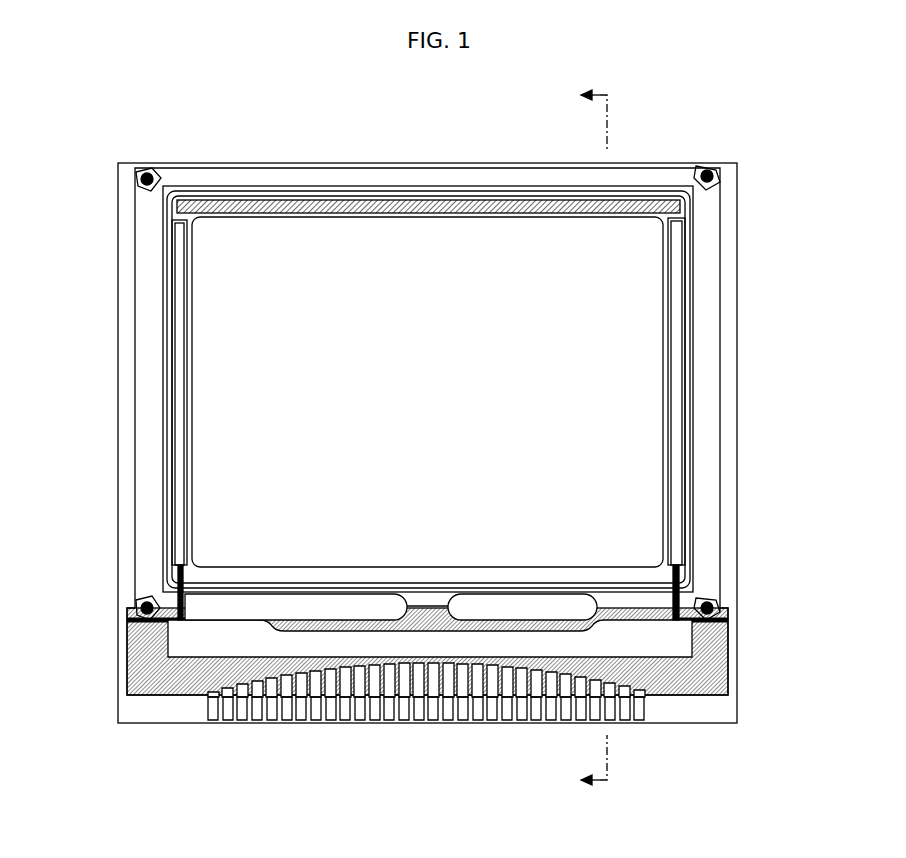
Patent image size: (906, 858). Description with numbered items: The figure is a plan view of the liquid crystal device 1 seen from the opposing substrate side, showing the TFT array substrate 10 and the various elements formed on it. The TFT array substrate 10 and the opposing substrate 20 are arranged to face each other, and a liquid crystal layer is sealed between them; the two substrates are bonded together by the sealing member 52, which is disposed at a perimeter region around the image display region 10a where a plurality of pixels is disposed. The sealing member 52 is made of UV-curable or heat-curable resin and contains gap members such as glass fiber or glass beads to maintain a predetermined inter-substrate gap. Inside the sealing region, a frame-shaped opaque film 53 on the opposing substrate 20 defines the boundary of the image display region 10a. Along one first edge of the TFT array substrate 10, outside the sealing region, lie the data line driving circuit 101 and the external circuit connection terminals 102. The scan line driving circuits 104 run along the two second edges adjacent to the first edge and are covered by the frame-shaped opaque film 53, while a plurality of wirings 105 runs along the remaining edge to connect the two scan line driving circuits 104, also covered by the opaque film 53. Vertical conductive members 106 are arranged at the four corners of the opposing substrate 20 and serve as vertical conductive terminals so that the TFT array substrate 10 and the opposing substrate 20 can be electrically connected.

The liquid crystal device 1 is at (664, 118).
The TFT array substrate 10 is at (247, 162).
The image display region 10a is at (235, 345).
The opposing substrate 20 is at (450, 162).
The sealing member 52 is at (710, 321).
The frame-shaped opaque film 53 is at (685, 573).
The data line driving circuit 101 is at (190, 650).
The external circuit connection terminals 102 is at (392, 703).
The scan line driving circuits 104 is at (680, 390).
The wirings 105 is at (341, 200).
The vertical conductive members 106 is at (158, 172).